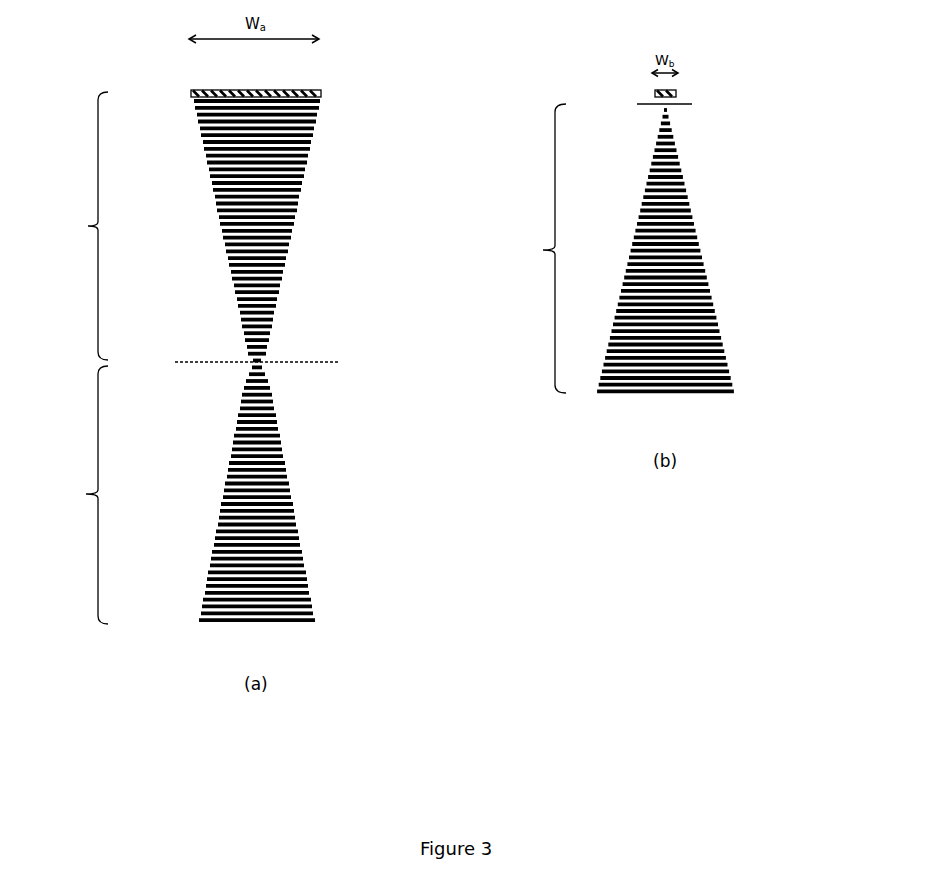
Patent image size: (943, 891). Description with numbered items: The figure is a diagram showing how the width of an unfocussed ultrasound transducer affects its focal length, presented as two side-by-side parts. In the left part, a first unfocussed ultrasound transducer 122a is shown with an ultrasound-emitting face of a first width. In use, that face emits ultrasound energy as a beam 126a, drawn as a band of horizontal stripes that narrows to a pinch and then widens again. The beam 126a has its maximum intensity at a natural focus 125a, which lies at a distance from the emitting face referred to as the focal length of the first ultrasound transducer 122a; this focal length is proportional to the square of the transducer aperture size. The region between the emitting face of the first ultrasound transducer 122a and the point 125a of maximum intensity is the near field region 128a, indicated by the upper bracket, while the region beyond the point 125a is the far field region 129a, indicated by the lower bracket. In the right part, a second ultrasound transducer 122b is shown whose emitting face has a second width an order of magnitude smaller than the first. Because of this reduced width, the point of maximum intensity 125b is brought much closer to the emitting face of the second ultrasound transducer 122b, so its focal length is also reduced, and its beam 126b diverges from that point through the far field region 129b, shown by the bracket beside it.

The first unfocussed ultrasound transducer 122a is at (322, 93).
The natural focus 125a is at (265, 371).
The beam of ultrasound energy 126a is at (288, 519).
The near field region 128a is at (166, 226).
The far field region 129a is at (238, 495).
The second ultrasound transducer 122b is at (678, 93).
The point of maximum intensity 125b is at (666, 107).
The beam of ultrasound energy 126b is at (701, 267).
The far field region 129b is at (678, 248).